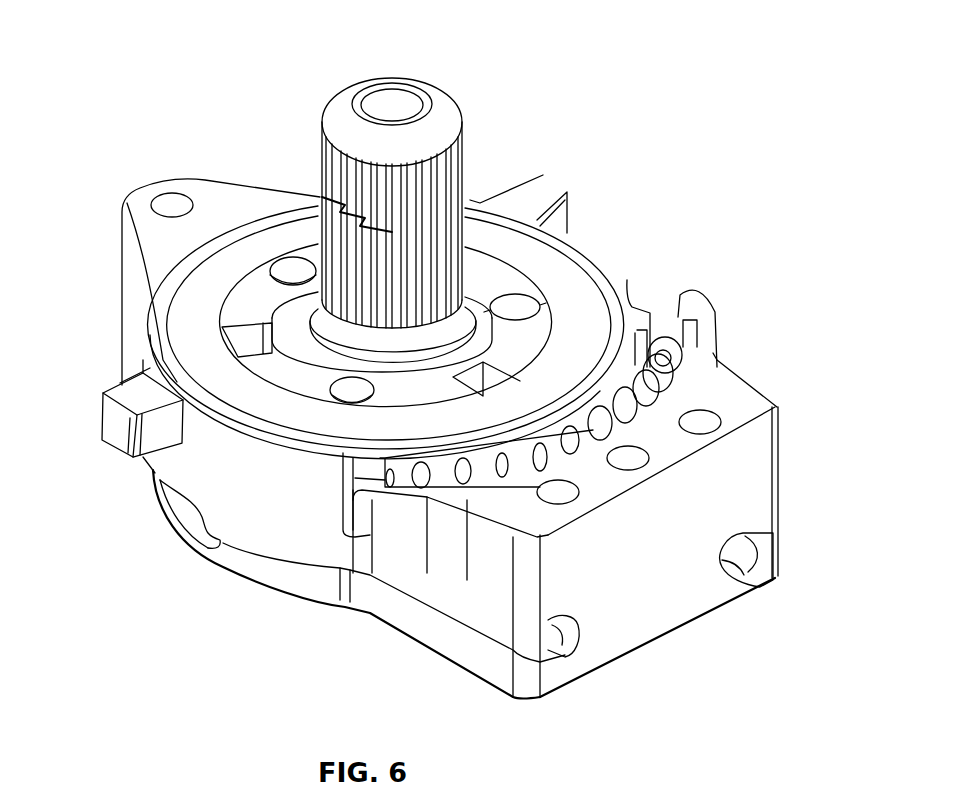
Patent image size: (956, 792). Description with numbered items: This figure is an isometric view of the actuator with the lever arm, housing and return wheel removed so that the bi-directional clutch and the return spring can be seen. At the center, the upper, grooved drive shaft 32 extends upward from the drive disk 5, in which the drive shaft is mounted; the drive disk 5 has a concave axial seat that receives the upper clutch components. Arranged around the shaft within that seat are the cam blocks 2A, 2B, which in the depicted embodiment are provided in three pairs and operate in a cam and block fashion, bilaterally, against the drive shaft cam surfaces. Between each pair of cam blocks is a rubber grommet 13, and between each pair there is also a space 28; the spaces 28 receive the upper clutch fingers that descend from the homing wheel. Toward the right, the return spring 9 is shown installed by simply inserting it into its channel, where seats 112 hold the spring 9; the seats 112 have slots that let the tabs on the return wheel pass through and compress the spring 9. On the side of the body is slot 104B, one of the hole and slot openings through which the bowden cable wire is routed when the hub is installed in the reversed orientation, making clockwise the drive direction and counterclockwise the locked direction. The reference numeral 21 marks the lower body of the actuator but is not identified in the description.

The motor housing assembly 21 is at (668, 664).
The drive shaft 32 is at (462, 131).
The rubber grommet 13 is at (268, 270).
The cam block 2B is at (500, 277).
The drive disk 5 is at (574, 296).
The cam block 2A is at (535, 338).
The space 28 is at (250, 341).
The seat 112 is at (692, 305).
The spring 9 is at (683, 368).
The slot 104B is at (760, 583).